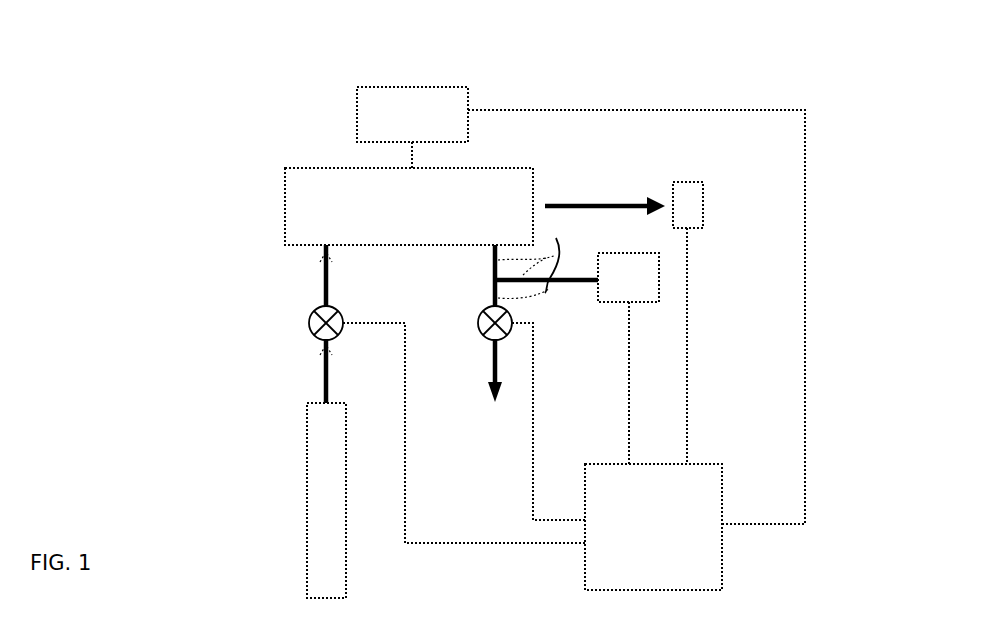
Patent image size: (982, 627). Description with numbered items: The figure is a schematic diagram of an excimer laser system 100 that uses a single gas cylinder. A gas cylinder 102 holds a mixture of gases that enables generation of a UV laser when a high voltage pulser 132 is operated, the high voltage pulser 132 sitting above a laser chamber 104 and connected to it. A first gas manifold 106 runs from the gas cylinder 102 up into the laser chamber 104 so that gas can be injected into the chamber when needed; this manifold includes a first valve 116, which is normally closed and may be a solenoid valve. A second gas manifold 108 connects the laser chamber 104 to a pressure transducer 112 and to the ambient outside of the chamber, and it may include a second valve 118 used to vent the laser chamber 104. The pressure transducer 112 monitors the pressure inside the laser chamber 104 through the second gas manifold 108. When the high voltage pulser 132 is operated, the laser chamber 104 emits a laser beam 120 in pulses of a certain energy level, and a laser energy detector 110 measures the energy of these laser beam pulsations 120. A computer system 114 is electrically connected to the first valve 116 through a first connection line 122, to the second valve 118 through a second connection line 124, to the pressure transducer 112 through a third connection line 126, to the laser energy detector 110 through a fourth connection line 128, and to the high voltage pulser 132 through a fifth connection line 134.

The excimer laser system 100 is at (728, 68).
The gas cylinder 102 is at (318, 520).
The laser chamber 104 is at (297, 212).
The first gas manifold 106 is at (318, 280).
The second gas manifold 108 is at (557, 238).
The laser energy detector 110 is at (690, 206).
The pressure transducer 112 is at (623, 305).
The computer system 114 is at (701, 508).
The first valve 116 is at (340, 315).
The second valve 118 is at (484, 312).
The laser beam 120 is at (600, 196).
The first connection line 122 is at (455, 545).
The second connection line 124 is at (535, 425).
The third connection line 126 is at (630, 382).
The fourth connection line 128 is at (688, 330).
The high voltage pulser 132 is at (377, 118).
The fifth connection line 134 is at (529, 110).